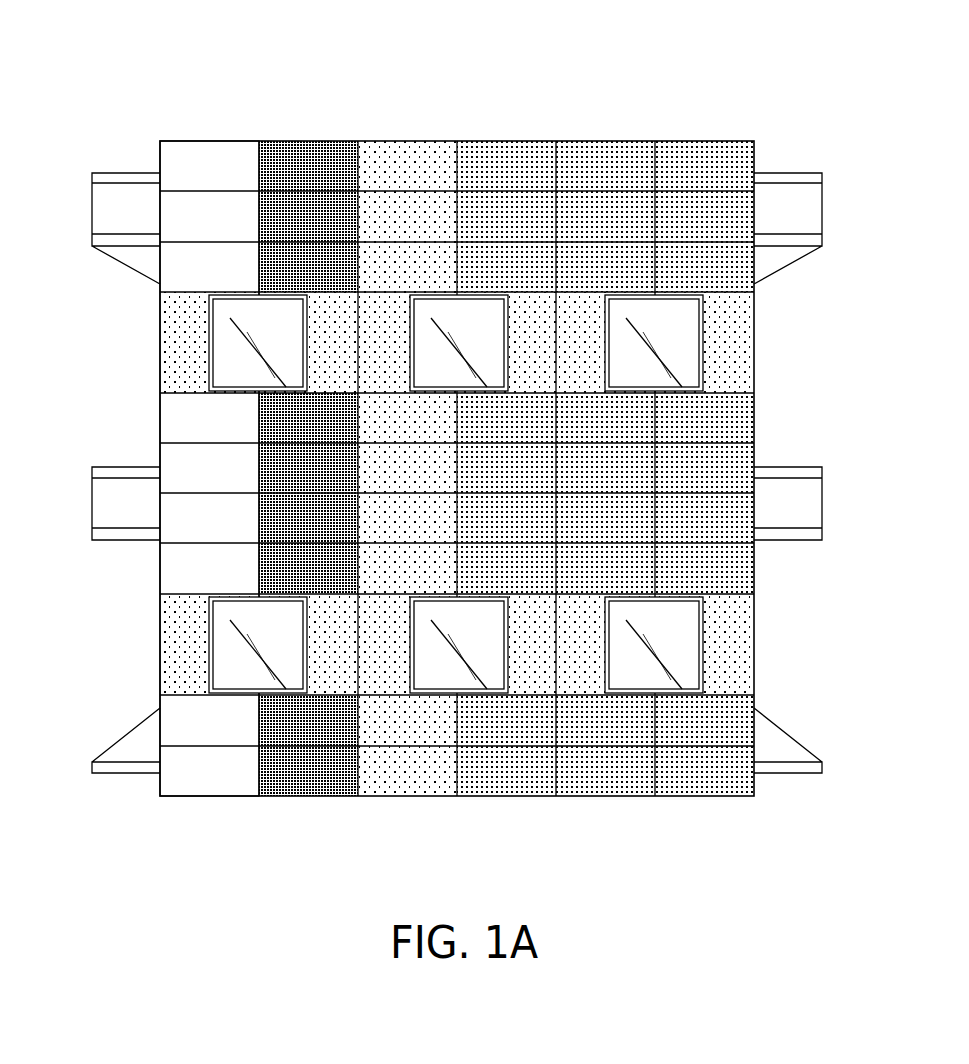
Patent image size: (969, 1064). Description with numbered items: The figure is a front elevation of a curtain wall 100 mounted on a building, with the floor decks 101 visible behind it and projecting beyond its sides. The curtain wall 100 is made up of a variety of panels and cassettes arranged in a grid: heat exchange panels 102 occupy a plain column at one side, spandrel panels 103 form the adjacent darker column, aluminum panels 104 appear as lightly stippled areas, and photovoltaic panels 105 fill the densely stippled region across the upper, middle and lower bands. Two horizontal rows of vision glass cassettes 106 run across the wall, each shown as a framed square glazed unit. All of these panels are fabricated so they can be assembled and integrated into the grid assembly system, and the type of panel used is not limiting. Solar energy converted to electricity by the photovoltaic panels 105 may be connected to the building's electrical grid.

The curtain wall 100 is at (184, 57).
The floor decks 101 is at (803, 487).
The heat exchange panels 102 is at (168, 415).
The spandrel panels 103 is at (307, 150).
The aluminum panels 104 is at (403, 783).
The photovoltaic (PV) panels 105 is at (606, 150).
The vision glass cassettes 106 is at (688, 342).